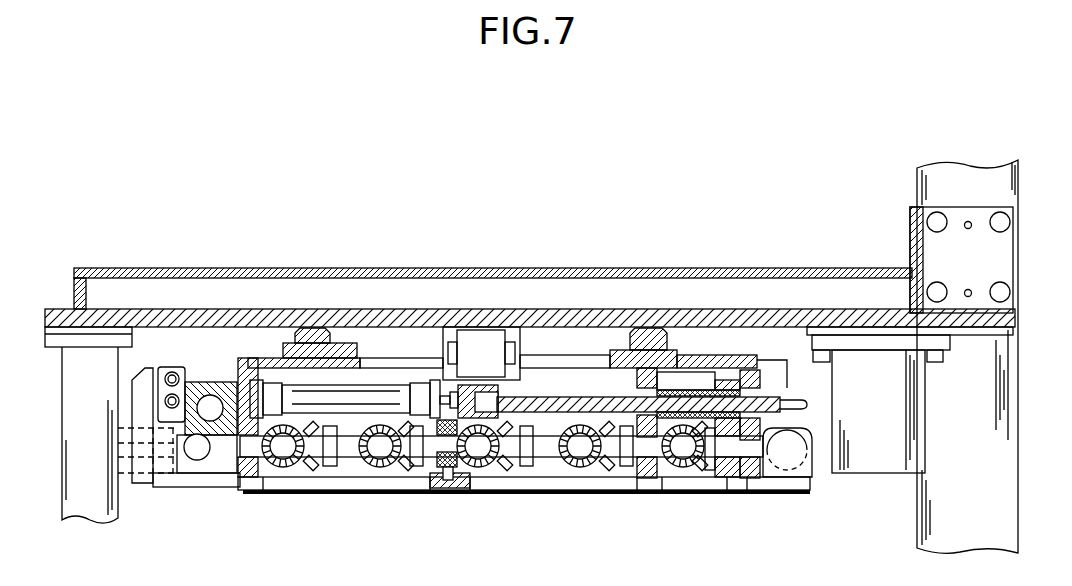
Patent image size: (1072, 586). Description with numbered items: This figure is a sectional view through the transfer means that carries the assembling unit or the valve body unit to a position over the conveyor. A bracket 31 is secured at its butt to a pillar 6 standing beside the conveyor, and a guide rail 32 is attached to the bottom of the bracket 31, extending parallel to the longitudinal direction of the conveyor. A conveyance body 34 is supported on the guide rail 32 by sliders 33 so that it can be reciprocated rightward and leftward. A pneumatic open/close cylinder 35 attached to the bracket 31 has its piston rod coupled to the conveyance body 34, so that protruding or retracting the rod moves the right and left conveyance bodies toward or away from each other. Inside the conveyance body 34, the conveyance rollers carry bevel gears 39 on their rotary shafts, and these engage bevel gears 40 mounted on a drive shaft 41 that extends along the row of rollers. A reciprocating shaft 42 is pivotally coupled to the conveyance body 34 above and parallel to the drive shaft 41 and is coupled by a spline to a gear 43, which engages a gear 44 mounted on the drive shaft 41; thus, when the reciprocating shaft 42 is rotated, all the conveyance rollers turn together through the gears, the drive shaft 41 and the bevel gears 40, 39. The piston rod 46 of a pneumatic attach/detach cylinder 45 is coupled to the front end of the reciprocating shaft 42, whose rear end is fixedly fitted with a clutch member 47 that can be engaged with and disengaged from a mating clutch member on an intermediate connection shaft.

The pillar 6 is at (995, 412).
The bracket 31 is at (748, 325).
The guide rail 32 is at (320, 340).
The slider 33 is at (295, 343).
The conveyance body 34 is at (258, 358).
The pneumatic open/close cylinder 35 is at (485, 342).
The bevel gear 39 is at (280, 467).
The bevel gear 40 is at (313, 466).
The drive shaft 41 is at (352, 457).
The reciprocating shaft 42 is at (556, 396).
The gear 43 is at (727, 378).
The gear 44 is at (730, 477).
The pneumatic attach/detach cylinder 45 is at (378, 396).
The piston rod 46 is at (445, 397).
The clutch member 47 is at (785, 380).